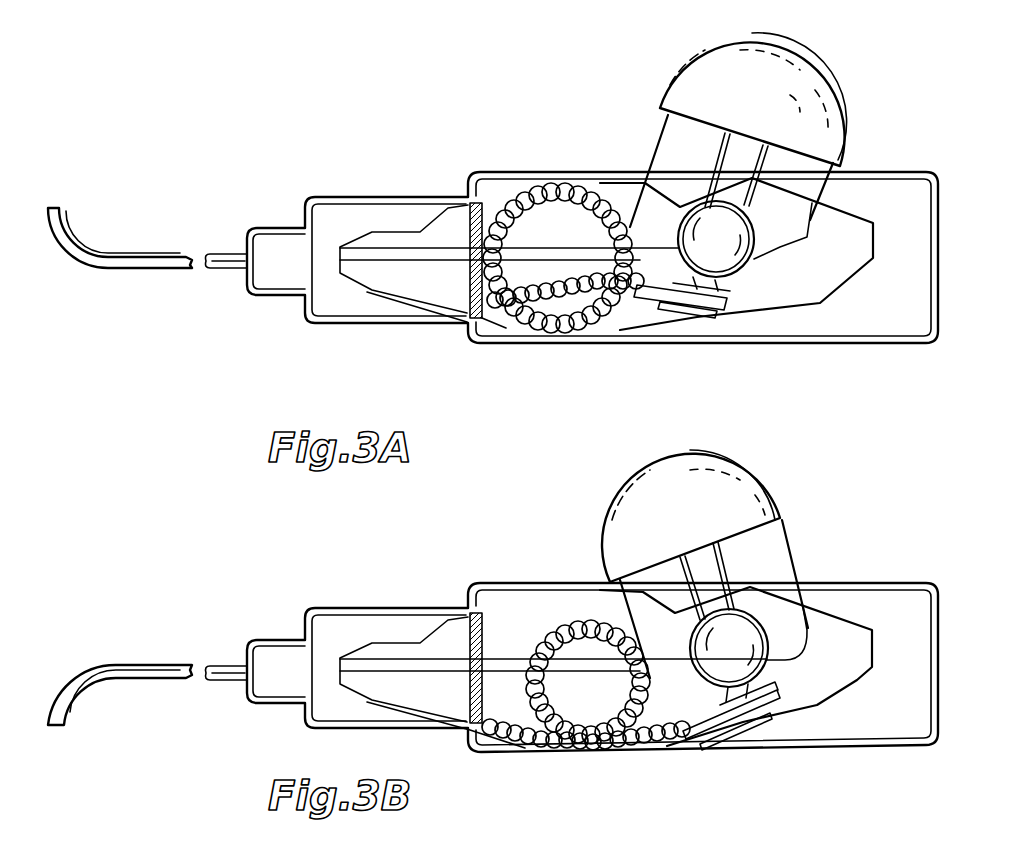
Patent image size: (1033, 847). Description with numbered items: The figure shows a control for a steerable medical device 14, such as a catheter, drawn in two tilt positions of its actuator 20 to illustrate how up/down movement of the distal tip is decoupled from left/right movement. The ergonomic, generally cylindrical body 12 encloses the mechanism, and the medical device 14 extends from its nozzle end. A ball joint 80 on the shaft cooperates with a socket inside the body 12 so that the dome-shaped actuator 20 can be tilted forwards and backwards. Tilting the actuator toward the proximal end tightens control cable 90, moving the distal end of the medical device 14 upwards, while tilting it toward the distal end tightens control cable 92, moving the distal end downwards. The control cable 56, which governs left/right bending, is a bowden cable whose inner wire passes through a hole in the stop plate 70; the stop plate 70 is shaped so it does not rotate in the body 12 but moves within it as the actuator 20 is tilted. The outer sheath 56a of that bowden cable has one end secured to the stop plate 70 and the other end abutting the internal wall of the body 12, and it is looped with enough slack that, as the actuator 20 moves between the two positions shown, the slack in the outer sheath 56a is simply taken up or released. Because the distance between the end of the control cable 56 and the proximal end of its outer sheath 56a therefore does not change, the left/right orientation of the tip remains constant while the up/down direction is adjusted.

In FIG. 3A, the body 12 is at (940, 250).
In FIG. 3A, the medical device 14 is at (150, 256).
In FIG. 3B, the medical device 14 is at (148, 666).
In FIG. 3A, the actuator 20 is at (843, 91).
In FIG. 3B, the actuator 20 is at (770, 479).
In FIG. 3A, the control cable 56 is at (393, 303).
In FIG. 3A, the outer sheath 56a is at (568, 338).
In FIG. 3B, the outer sheath 56a is at (572, 745).
In FIG. 3A, the stop plate 70 is at (703, 318).
In FIG. 3B, the stop plate 70 is at (768, 725).
In FIG. 3A, the ball joint 80 is at (748, 262).
In FIG. 3A, the control cable 90 is at (660, 128).
In FIG. 3A, the control cable 92 is at (873, 258).